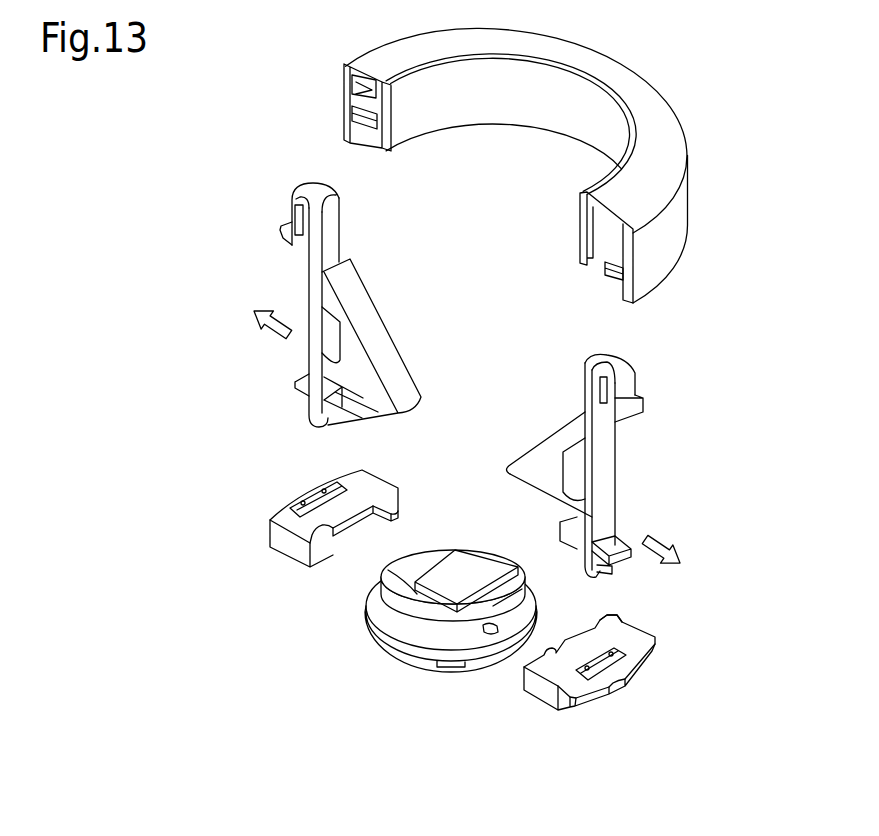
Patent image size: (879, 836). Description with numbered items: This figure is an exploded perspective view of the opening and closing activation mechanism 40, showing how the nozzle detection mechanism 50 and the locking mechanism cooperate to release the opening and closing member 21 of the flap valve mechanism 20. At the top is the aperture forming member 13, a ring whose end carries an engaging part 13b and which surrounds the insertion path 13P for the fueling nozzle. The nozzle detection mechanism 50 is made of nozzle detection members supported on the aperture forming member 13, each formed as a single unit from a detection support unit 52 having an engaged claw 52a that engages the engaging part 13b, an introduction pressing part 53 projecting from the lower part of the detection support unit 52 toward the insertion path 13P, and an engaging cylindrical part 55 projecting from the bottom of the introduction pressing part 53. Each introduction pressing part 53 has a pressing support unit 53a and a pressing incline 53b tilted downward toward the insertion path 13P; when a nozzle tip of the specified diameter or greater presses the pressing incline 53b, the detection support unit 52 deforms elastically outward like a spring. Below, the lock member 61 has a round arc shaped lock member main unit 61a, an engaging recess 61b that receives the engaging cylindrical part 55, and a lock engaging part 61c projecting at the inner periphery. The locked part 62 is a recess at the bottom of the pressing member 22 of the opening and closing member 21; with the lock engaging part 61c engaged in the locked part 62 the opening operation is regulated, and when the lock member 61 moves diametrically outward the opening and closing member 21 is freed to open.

The aperture forming member 13 is at (598, 47).
The engaging part 13b is at (600, 262).
The insertion path 13P is at (488, 302).
The flap valve mechanism 20 is at (323, 615).
The opening and closing member 21 is at (373, 650).
The pressing member 22 is at (452, 620).
The opening and closing activation mechanism 40 is at (188, 163).
The nozzle detection mechanism 50 is at (275, 250).
The detection support unit 52 is at (605, 472).
The engaged claw 52a is at (634, 407).
The introduction pressing part 53 is at (453, 422).
The pressing support unit 53a is at (533, 495).
The pressing incline 53b is at (531, 448).
The engaging cylindrical part 55 is at (602, 570).
The lock member 61 is at (627, 685).
The lock member main unit 61a is at (625, 675).
The engaging recess 61b is at (627, 647).
The lock engaging part 61c is at (565, 643).
The locked part 62 is at (512, 620).